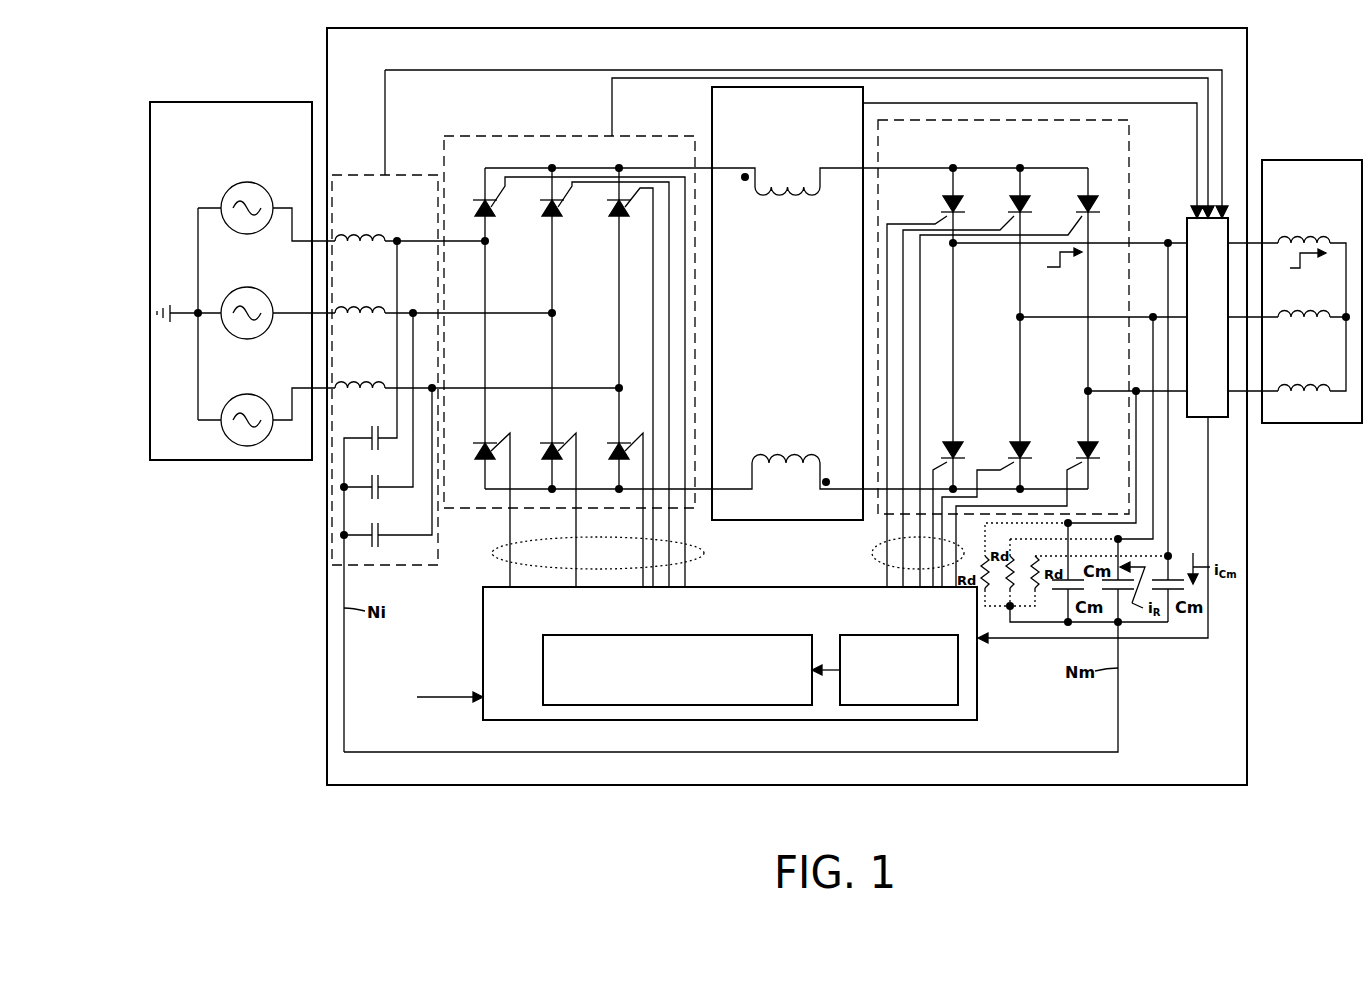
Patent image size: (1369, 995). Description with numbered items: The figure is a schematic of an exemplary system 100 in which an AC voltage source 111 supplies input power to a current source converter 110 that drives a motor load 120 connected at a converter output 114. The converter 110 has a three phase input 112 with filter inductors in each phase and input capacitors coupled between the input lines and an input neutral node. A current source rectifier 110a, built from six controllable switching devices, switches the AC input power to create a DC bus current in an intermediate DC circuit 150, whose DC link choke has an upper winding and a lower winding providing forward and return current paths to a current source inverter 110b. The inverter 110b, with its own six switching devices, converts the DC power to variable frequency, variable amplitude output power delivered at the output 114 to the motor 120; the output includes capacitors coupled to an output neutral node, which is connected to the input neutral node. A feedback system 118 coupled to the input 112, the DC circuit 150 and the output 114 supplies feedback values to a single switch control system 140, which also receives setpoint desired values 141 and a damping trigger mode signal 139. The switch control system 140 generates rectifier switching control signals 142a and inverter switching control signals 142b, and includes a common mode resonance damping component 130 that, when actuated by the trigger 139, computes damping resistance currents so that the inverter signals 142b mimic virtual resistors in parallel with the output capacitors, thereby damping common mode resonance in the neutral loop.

The system 100 is at (226, 58).
The power conversion system 110 is at (327, 55).
The AC voltage source 111 is at (232, 102).
The input 112 is at (393, 174).
The current source rectifier 110a is at (490, 136).
The current source inverter 110b is at (1132, 135).
The intermediate DC circuit 150 is at (712, 112).
The feedback system 118 is at (1188, 221).
The motor load 120 is at (1305, 160).
The converter output 114 is at (1255, 437).
The CSR switching control signals 142a is at (500, 565).
The inverter switching control signals 142b is at (872, 553).
The switch control system 140 is at (483, 645).
The common mode resonance damping component 130 is at (543, 669).
The damping trigger mode signal 139 is at (958, 673).
The setpoint desired values 141 is at (449, 697).